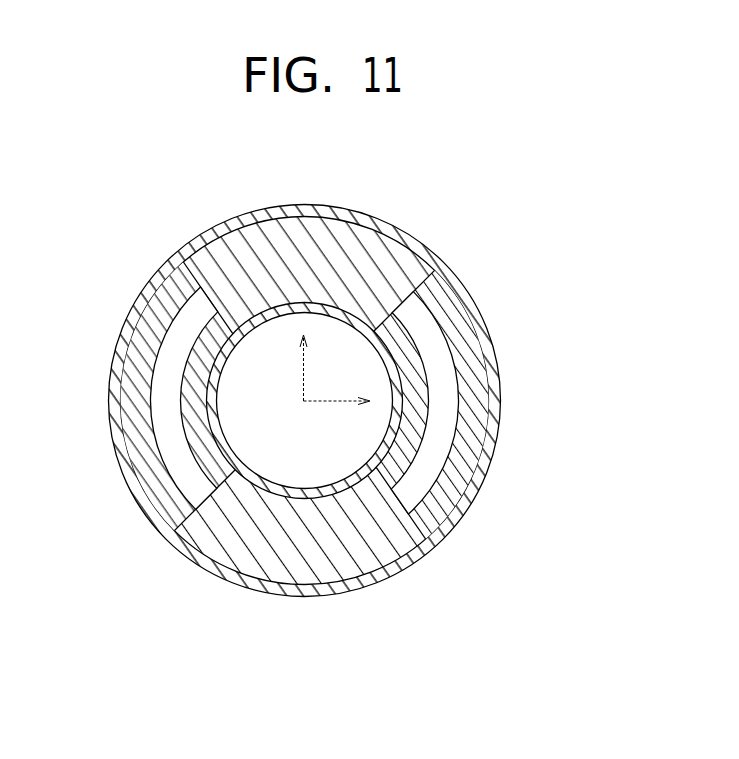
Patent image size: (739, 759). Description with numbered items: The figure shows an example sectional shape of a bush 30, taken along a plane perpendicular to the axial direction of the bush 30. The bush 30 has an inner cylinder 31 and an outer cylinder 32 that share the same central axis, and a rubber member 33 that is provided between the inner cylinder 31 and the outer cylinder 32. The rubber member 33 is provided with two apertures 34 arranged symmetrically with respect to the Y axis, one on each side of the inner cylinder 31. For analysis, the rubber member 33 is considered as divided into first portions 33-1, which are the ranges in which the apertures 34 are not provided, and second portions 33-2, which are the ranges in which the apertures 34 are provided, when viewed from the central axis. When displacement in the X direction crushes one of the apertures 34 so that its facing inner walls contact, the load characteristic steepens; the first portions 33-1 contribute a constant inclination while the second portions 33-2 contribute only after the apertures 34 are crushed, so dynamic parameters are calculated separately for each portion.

The bush 30 is at (125, 172).
The inner cylinder 31 is at (200, 352).
The outer cylinder 32 is at (120, 447).
The rubber member 33 is at (332, 400).
The first portions 33-1 is at (353, 265).
The second portions 33-2 is at (150, 478).
The apertures 34 is at (160, 400).